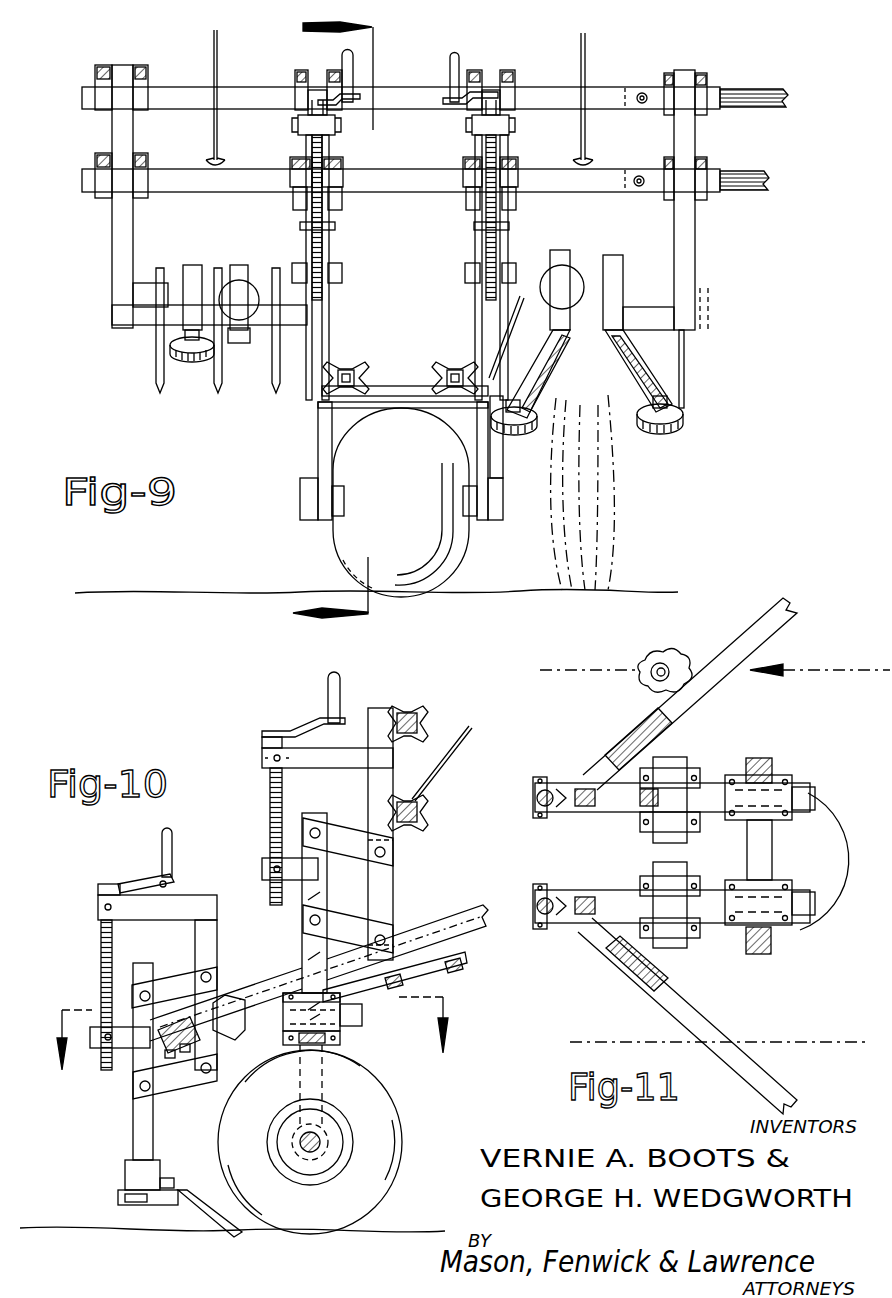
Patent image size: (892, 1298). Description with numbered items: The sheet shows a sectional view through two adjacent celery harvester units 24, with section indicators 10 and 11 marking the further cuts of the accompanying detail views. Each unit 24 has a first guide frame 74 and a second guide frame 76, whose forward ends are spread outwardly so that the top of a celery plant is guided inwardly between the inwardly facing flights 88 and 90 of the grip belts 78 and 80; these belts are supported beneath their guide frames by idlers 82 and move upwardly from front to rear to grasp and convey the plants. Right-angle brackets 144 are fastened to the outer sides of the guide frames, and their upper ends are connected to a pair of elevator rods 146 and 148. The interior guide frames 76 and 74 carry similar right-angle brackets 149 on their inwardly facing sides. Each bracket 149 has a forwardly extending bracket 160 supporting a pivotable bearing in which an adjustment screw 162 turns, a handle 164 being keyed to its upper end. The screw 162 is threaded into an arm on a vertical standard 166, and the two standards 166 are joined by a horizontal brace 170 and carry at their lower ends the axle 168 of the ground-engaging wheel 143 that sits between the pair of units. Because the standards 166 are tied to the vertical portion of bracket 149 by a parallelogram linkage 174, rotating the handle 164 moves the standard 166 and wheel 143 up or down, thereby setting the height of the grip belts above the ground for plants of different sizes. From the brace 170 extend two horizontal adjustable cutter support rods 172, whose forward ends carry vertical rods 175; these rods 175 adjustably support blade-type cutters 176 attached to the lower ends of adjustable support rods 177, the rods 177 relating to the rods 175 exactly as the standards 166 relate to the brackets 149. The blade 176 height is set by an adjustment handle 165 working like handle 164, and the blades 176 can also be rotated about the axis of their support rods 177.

In FIG. 9, the section line 10- 10 is at (313, 315).
In FIG. 10, the section line 11- 11 is at (246, 1033).
In FIG. 9, the harvester unit 24 is at (179, 32).
In FIG. 9, the first guide frame 74 is at (239, 282).
In FIG. 10, the first guide frame 74 is at (462, 906).
In FIG. 9, the second guide frame 76 is at (192, 282).
In FIG. 9, the grip belt 78 is at (267, 372).
In FIG. 10, the grip belt 78 is at (467, 975).
In FIG. 9, the grip belt 80 is at (175, 370).
In FIG. 9, the idlers 82 is at (540, 423).
In FIG. 10, the idlers 82 is at (402, 981).
In FIG. 9, the inwardly facing flight 88 is at (598, 305).
In FIG. 9, the inwardly facing flight 90 is at (583, 483).
In FIG. 9, the ground-engaging wheel 143 is at (346, 552).
In FIG. 10, the ground-engaging wheel 143 is at (396, 1142).
In FIG. 11, the ground-engaging wheel 143 is at (820, 908).
In FIG. 9, the right-angle bracket 144 is at (129, 241).
In FIG. 9, the elevator rod 146 is at (191, 188).
In FIG. 10, the elevator rod 146 is at (413, 709).
In FIG. 9, the elevator rod 148 is at (260, 108).
In FIG. 10, the elevator rod 148 is at (423, 813).
In FIG. 9, the right-angle bracket 149 is at (334, 143).
In FIG. 10, the right-angle bracket 149 is at (386, 889).
In FIG. 9, the forwardly extending bracket 160 is at (512, 124).
In FIG. 10, the forwardly extending bracket 160 is at (326, 766).
In FIG. 9, the adjustment screw 162 is at (333, 257).
In FIG. 10, the adjustment screw 162 is at (284, 791).
In FIG. 9, the handle 164 is at (341, 62).
In FIG. 10, the handle 164 is at (343, 692).
In FIG. 10, the adjustment handle 165 is at (174, 843).
In FIG. 9, the vertical standard 166 is at (312, 395).
In FIG. 10, the vertical standard 166 is at (301, 948).
In FIG. 11, the vertical standard 166 is at (774, 762).
In FIG. 10, the axle 168 is at (306, 1130).
In FIG. 9, the horizontal brace 170 is at (387, 392).
In FIG. 11, the horizontal brace 170 is at (772, 848).
In FIG. 9, the cutter support rod 172 is at (350, 366).
In FIG. 10, the cutter support rod 172 is at (362, 1017).
In FIG. 11, the cutter support rod 172 is at (808, 788).
In FIG. 10, the parallelogram linkage 174 is at (370, 852).
In FIG. 10, the vertical rod 175 is at (213, 943).
In FIG. 11, the vertical rod 175 is at (650, 820).
In FIG. 10, the blade-type cutter 176 is at (407, 1233).
In FIG. 11, the blade-type cutter 176 is at (702, 694).
In FIG. 10, the adjustable support rod 177 is at (151, 1137).
In FIG. 11, the adjustable support rod 177 is at (577, 812).